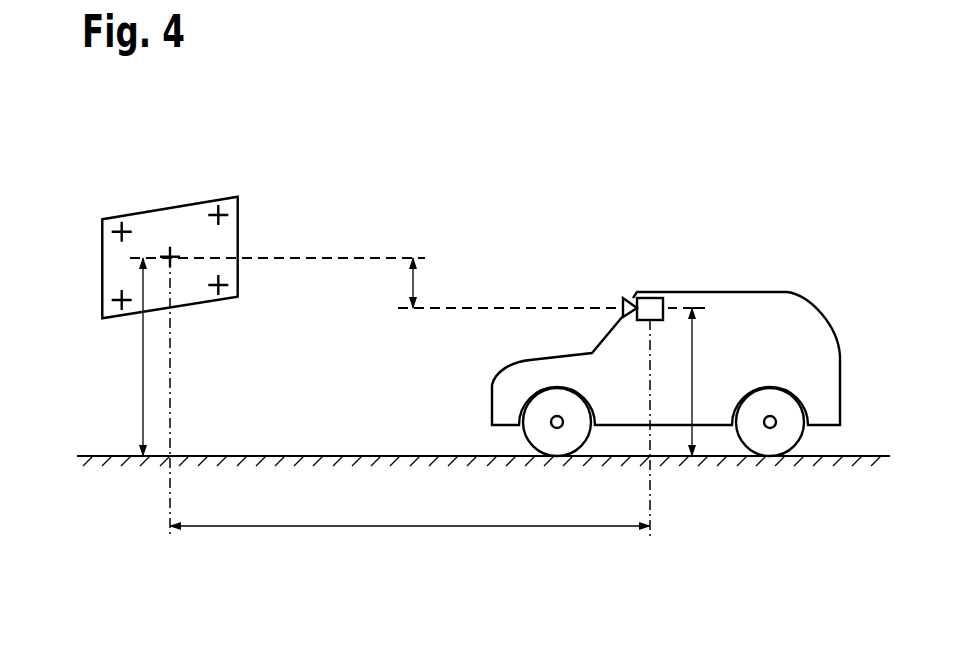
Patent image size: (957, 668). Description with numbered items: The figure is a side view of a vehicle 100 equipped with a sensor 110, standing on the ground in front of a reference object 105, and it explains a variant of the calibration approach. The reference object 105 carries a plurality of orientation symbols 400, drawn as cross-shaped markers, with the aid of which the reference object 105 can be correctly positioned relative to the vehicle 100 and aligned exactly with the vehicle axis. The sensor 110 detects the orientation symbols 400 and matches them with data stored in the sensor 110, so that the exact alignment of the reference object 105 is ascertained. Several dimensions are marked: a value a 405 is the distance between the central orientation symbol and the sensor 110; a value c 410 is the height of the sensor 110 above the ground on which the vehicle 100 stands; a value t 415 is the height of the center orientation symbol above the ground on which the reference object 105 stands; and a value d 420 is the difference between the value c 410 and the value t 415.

The vehicle 100 is at (742, 292).
The reference object 105 is at (140, 210).
The sensor 110 is at (650, 297).
The orientation symbols 400 is at (215, 208).
The value a 405 is at (400, 528).
The value c 410 is at (693, 345).
The value t 415 is at (143, 380).
The value d 420 is at (415, 278).